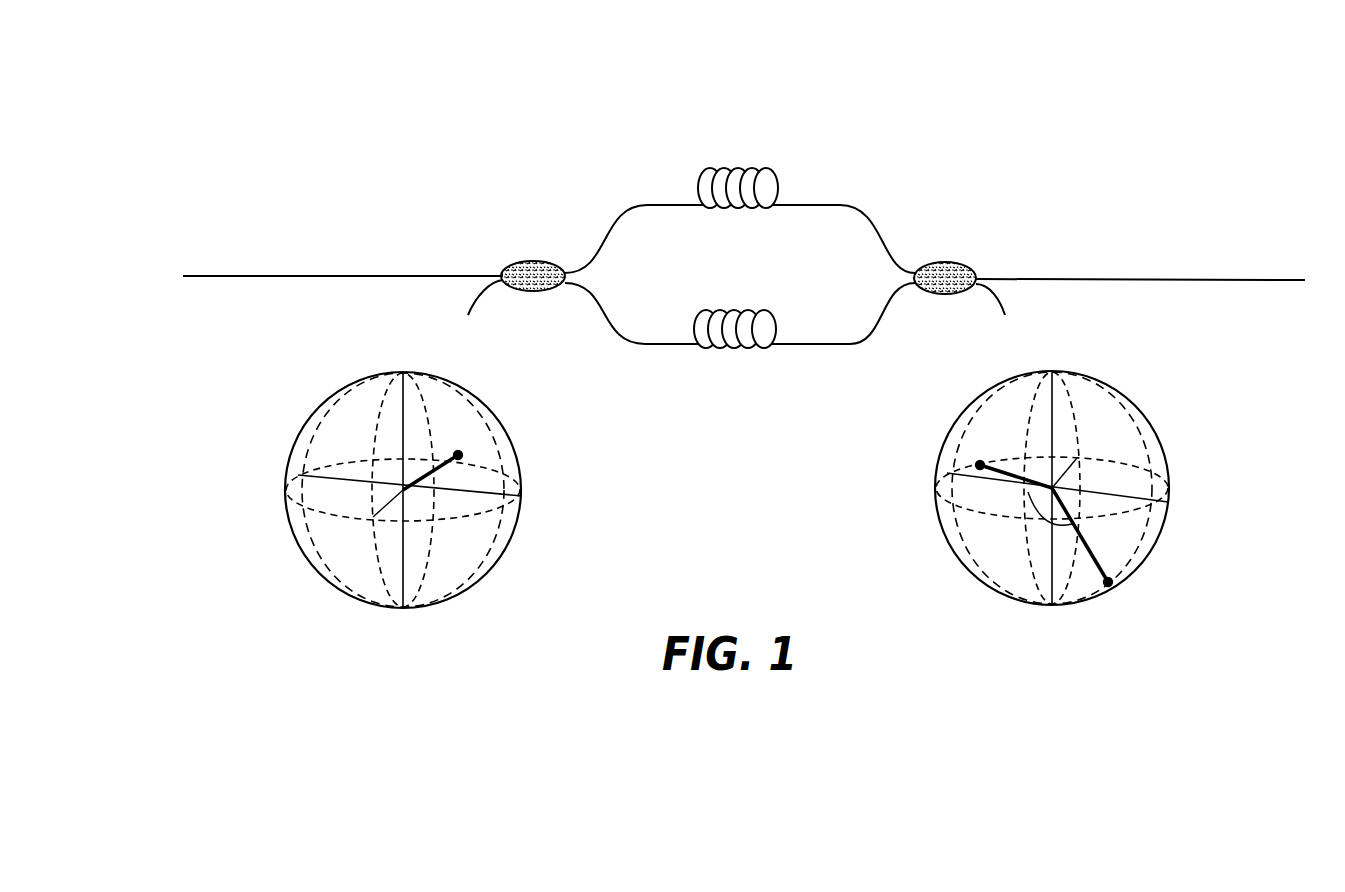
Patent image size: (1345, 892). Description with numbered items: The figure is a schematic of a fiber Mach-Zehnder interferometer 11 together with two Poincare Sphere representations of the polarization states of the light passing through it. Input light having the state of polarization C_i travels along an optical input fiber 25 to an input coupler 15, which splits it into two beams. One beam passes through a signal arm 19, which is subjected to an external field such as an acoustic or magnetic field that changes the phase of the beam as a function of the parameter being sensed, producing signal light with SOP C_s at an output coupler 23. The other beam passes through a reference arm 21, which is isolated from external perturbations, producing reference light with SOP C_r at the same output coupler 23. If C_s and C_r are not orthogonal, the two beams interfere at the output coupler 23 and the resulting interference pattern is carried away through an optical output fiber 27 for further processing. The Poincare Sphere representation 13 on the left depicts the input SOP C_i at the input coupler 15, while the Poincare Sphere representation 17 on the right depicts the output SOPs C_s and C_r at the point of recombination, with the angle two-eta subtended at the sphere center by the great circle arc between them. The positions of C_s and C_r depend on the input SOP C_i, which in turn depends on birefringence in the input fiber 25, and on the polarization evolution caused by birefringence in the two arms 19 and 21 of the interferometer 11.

The fiber Mach-Zehnder interferometer 11 is at (646, 194).
The Poincare Sphere representation 13 is at (262, 585).
The input coupler 15 is at (530, 261).
The Poincare Sphere representation 17 is at (1218, 548).
The signal arm 19 is at (723, 168).
The reference arm 21 is at (693, 345).
The output coupler 23 is at (943, 262).
The optical input fiber 25 is at (416, 276).
The optical output fiber 27 is at (1220, 259).